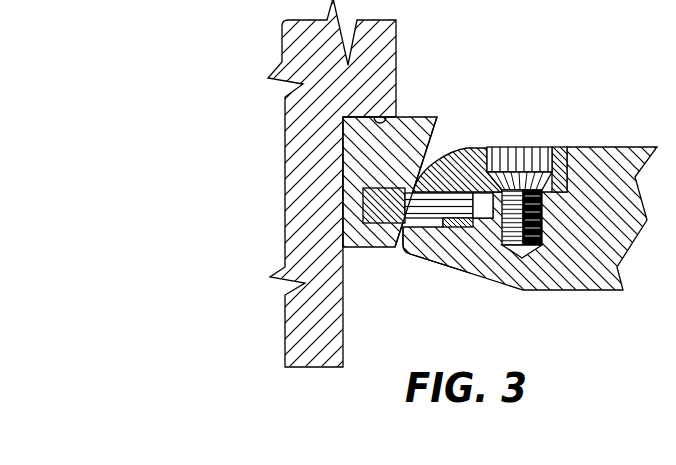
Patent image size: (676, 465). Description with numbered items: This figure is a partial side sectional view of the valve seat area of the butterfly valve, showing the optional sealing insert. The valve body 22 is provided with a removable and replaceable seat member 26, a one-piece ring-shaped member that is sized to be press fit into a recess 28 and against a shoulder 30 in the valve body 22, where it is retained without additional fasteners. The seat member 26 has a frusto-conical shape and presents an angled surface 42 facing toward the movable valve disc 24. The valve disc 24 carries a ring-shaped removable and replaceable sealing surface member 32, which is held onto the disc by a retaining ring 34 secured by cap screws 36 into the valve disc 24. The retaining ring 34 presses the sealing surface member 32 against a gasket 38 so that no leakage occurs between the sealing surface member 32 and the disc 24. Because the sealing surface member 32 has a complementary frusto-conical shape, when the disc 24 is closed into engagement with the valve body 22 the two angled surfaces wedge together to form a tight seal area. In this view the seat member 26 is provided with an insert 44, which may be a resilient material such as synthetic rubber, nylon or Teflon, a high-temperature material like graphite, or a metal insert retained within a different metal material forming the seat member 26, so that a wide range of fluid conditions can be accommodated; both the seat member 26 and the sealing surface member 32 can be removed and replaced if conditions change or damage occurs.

The valve body 22 is at (285, 202).
The valve disc 24 is at (612, 153).
The seat member 26 is at (404, 128).
The recess 28 is at (345, 160).
The shoulder 30 is at (396, 117).
The sealing surface member 32 is at (423, 206).
The retaining ring 34 is at (466, 150).
The cap screws 36 is at (525, 158).
The gasket 38 is at (450, 223).
The angled surface 42 is at (437, 118).
The insert 44 is at (365, 217).